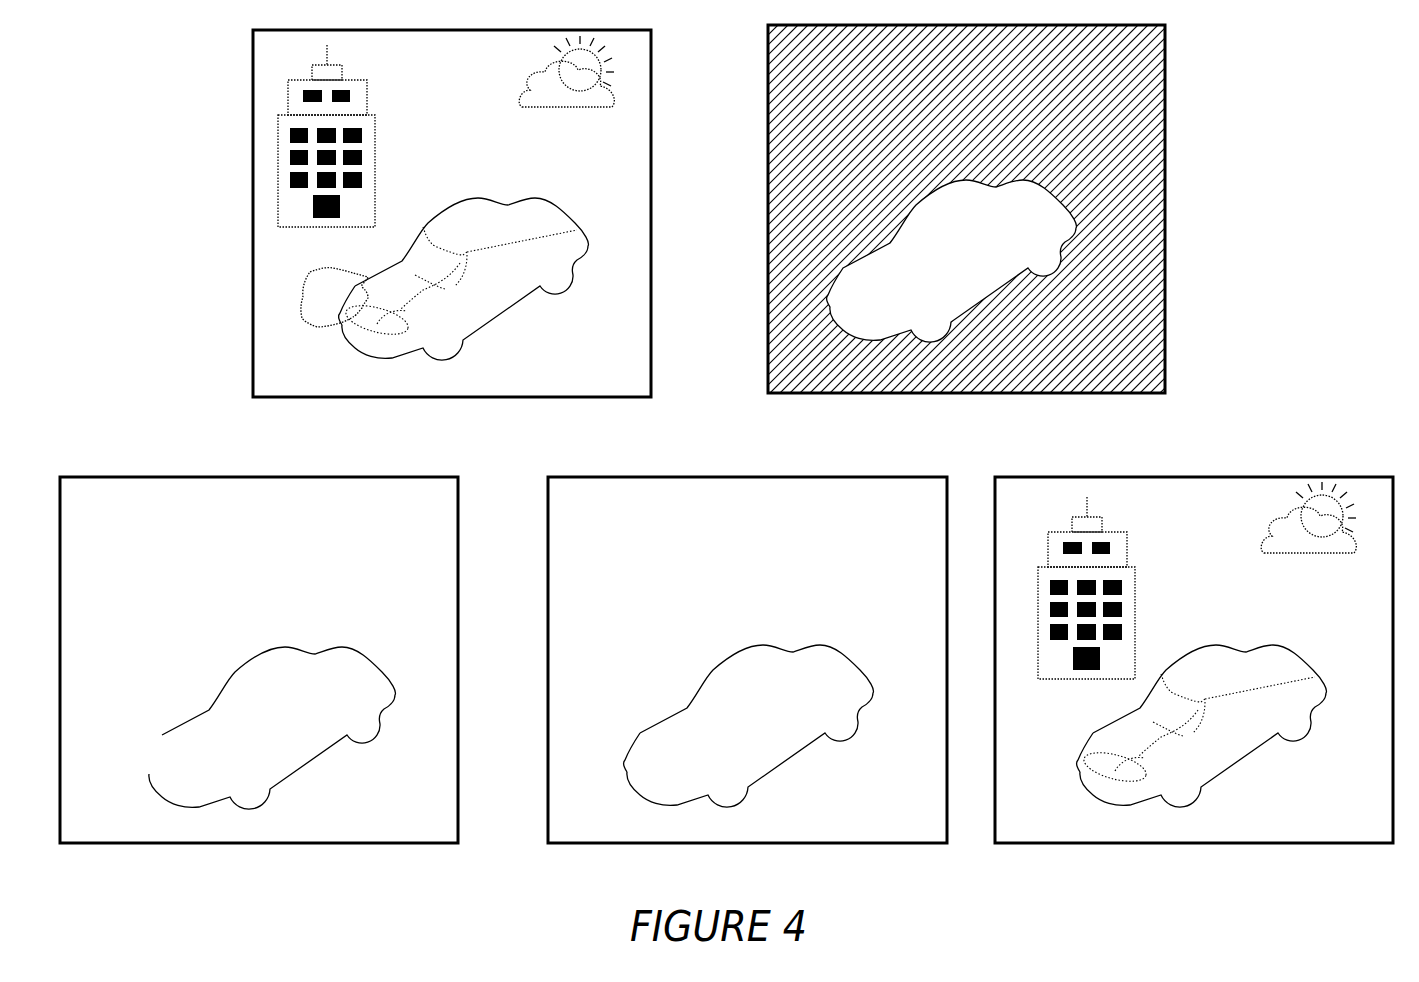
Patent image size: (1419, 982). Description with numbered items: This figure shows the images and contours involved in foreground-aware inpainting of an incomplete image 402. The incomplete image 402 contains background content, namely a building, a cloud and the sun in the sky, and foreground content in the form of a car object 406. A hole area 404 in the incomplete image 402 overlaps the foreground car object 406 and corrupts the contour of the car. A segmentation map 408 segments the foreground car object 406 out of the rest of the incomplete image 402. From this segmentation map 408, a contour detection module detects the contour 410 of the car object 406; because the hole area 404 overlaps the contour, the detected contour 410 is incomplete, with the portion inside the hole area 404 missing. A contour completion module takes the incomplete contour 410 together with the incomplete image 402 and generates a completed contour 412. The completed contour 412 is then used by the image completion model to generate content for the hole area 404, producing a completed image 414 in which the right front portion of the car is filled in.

The incomplete image 402 is at (253, 190).
The hole area 404 is at (300, 311).
The car object 406 is at (392, 358).
The segmentation map 408 is at (1165, 244).
The contour 410 is at (263, 807).
The completed contour 412 is at (797, 751).
The completed image 414 is at (1225, 843).